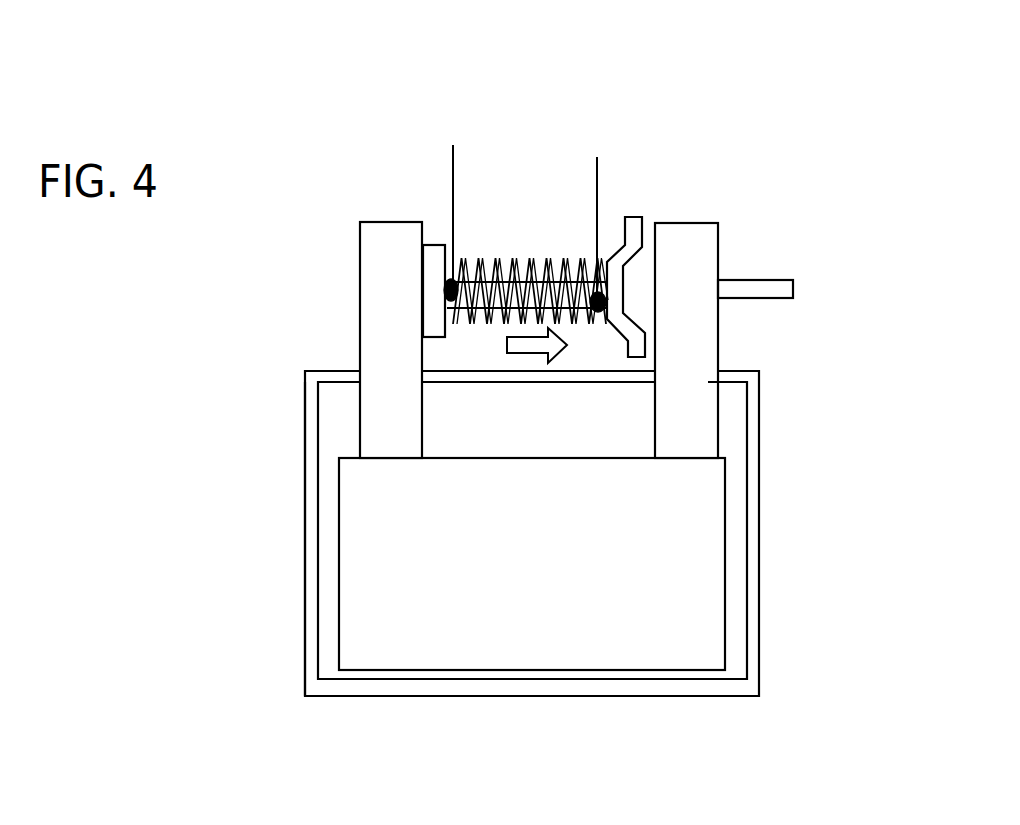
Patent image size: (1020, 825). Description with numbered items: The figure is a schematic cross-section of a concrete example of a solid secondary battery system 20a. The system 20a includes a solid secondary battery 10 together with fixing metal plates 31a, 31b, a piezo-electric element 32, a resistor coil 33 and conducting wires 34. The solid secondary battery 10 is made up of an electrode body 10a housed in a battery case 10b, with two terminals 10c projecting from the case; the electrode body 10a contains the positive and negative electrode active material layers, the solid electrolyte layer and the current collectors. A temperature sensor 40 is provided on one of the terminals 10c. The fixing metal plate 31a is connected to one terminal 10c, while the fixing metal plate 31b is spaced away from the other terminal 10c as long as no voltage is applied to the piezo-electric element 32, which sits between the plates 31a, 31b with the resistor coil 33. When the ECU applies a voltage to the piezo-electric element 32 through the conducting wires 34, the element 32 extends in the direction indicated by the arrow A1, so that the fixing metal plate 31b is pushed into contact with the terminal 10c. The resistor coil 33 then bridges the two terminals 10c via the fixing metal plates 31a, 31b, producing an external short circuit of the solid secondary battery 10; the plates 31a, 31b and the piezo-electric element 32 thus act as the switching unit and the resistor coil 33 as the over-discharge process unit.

The solid secondary battery 10 is at (794, 452).
The electrode body 10a is at (472, 618).
The battery case 10b is at (312, 565).
The terminals 10c is at (390, 235).
The solid secondary battery system 20a is at (540, 66).
The fixing metal plate 31a is at (430, 328).
The fixing metal plate 31b is at (636, 340).
The piezo-electric element 32 is at (540, 262).
The resistor coil 33 is at (483, 262).
The conducting wires 34 is at (458, 186).
The temperature sensor 40 is at (756, 280).
The arrow A1 is at (527, 364).